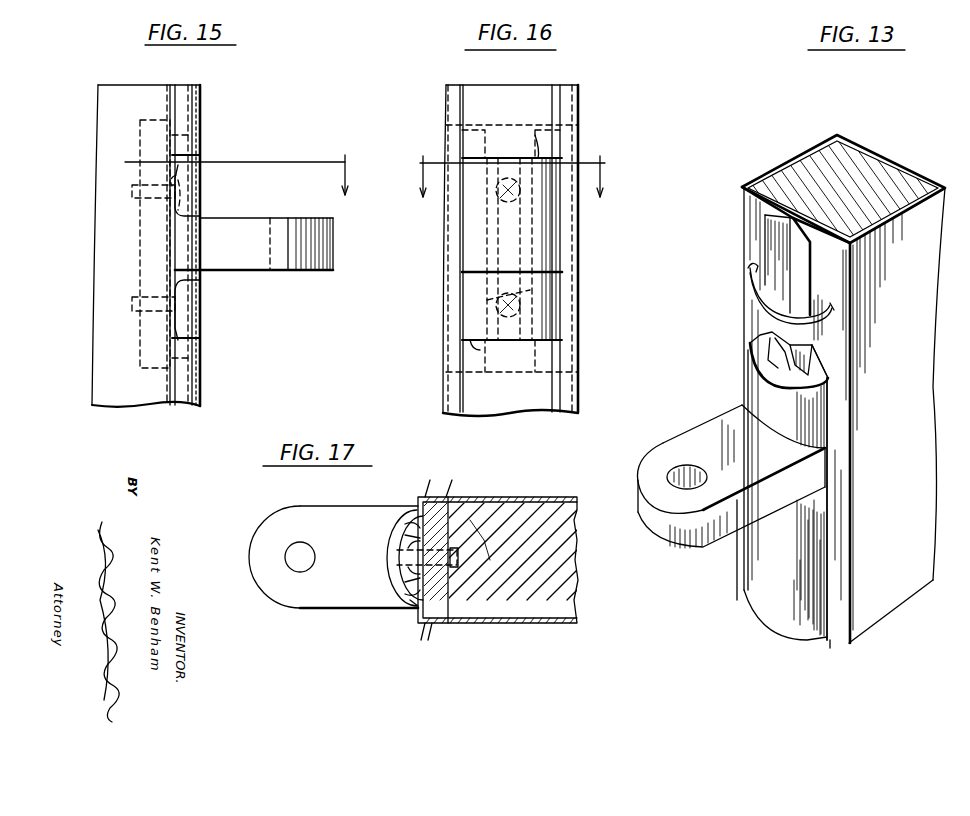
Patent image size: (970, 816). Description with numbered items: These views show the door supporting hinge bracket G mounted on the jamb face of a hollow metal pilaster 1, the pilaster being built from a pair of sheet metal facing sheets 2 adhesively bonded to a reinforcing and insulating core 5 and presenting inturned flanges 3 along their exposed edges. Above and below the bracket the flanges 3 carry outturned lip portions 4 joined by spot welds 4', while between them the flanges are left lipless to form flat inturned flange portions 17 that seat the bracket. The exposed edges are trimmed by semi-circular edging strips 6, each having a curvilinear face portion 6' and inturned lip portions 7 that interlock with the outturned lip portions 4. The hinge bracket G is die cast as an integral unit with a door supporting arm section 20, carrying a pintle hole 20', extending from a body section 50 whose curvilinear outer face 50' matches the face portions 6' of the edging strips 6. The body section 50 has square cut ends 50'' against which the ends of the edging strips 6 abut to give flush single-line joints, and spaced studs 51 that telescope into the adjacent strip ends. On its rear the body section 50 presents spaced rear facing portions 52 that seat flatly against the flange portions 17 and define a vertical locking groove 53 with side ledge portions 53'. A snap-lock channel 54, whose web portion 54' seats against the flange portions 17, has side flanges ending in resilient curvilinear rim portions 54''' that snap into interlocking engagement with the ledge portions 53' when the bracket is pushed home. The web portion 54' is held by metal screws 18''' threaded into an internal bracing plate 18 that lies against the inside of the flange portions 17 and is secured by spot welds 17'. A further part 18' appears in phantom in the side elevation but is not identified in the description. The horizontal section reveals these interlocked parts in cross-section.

In FIG. 15, the pilaster 1 is at (152, 84).
In FIG. 16, the pilaster 1 is at (590, 91).
In FIG. 13, the pilaster 1 is at (814, 140).
In FIG. 17, the pilaster 1 is at (504, 633).
In FIG. 15, the pilaster facing sheet 2 is at (125, 92).
In FIG. 16, the pilaster facing sheet 2 is at (446, 90).
In FIG. 13, the pilaster facing sheet 2 is at (790, 165).
In FIG. 17, the pilaster facing sheet 2 is at (540, 497).
In FIG. 16, the inturned flange 3 is at (452, 86).
In FIG. 13, the inturned flange 3 is at (735, 567).
In FIG. 13, the outturned lip portion 4 is at (764, 265).
In FIG. 13, the spot weld 4' is at (784, 238).
In FIG. 13, the reinforcing and insulating core 5 is at (880, 165).
In FIG. 17, the reinforcing and insulating core 5 is at (565, 528).
In FIG. 15, the edging strip 6 is at (197, 245).
In FIG. 16, the edging strip 6 is at (510, 243).
In FIG. 13, the edging strip 6 is at (774, 427).
In FIG. 13, the face portion 6' is at (735, 463).
In FIG. 13, the inturned lip portion 7 is at (765, 265).
In FIG. 15, the inturned flange portion 17 is at (246, 165).
In FIG. 16, the inturned flange portion 17 is at (507, 167).
In FIG. 17, the inturned flange portion 17 is at (420, 563).
In FIG. 17, the spot weld 17' is at (443, 559).
In FIG. 15, the internal bracing plate 18 is at (120, 244).
In FIG. 16, the internal bracing plate 18 is at (516, 246).
In FIG. 17, the internal bracing plate 18 is at (468, 542).
In FIG. 15, the bracket tab 18' is at (122, 248).
In FIG. 16, the metal screw 18''' is at (514, 247).
In FIG. 17, the metal screw 18''' is at (495, 509).
In FIG. 15, the door supporting arm section 20 is at (254, 256).
In FIG. 16, the door supporting arm section 20 is at (538, 258).
In FIG. 13, the door supporting arm section 20 is at (721, 478).
In FIG. 17, the door supporting arm section 20 is at (317, 557).
In FIG. 15, the pintle hole 20' is at (285, 225).
In FIG. 13, the pintle hole 20' is at (652, 463).
In FIG. 17, the pintle hole 20' is at (259, 535).
In FIG. 15, the body section 50 is at (205, 246).
In FIG. 16, the body section 50 is at (537, 249).
In FIG. 13, the body section 50 is at (798, 501).
In FIG. 17, the body section 50 is at (490, 503).
In FIG. 13, the curvilinear outer face 50' is at (797, 508).
In FIG. 17, the curvilinear outer face 50' is at (380, 501).
In FIG. 15, the square cut end 50'' is at (209, 237).
In FIG. 16, the square cut end 50'' is at (518, 241).
In FIG. 13, the square cut end 50'' is at (861, 368).
In FIG. 15, the stud 51 is at (186, 138).
In FIG. 16, the stud 51 is at (468, 134).
In FIG. 13, the stud 51 is at (748, 345).
In FIG. 15, the rear facing portion 52 is at (198, 164).
In FIG. 13, the rear facing portion 52 is at (830, 370).
In FIG. 17, the rear facing portion 52 is at (418, 606).
In FIG. 17, the locking groove 53 is at (398, 557).
In FIG. 17, the side ledge portion 53' is at (392, 557).
In FIG. 15, the snap-lock channel 54 is at (226, 176).
In FIG. 16, the snap-lock channel 54 is at (509, 292).
In FIG. 13, the snap-lock channel 54 is at (746, 354).
In FIG. 17, the snap-lock channel 54 is at (383, 571).
In FIG. 17, the web portion 54' is at (386, 544).
In FIG. 17, the resilient curvilinear rim portion 54''' is at (382, 558).
In FIG. 15, the door supporting hinge bracket G is at (336, 275).
In FIG. 16, the door supporting hinge bracket G is at (462, 257).
In FIG. 13, the door supporting hinge bracket G is at (670, 558).
In FIG. 17, the door supporting hinge bracket G is at (280, 617).